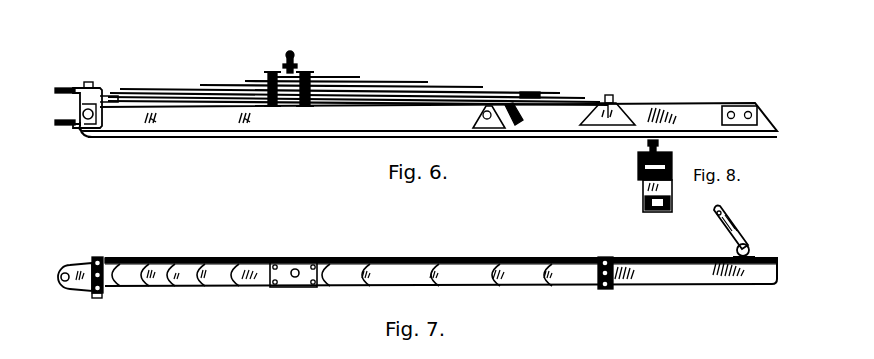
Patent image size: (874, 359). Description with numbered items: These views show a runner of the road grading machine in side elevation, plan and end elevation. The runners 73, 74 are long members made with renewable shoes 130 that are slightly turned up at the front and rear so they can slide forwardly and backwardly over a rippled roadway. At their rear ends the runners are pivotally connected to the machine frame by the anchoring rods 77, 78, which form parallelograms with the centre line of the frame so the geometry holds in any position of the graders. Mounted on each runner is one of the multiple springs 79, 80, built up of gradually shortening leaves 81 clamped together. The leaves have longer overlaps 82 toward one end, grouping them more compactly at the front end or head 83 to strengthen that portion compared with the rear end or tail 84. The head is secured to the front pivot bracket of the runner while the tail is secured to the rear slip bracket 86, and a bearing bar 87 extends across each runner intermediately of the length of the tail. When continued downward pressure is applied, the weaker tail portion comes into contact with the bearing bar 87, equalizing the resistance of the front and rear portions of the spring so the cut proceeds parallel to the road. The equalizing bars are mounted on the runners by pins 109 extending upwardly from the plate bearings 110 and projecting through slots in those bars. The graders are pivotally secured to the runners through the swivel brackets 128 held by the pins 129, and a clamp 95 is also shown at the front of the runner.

In FIG. 6, the runner 73 is at (429, 141).
In FIG. 7, the runner 73 is at (441, 285).
In FIG. 6, the runner 74 is at (429, 141).
In FIG. 7, the runner 74 is at (703, 288).
In FIG. 7, the anchoring rod 77 is at (749, 232).
In FIG. 7, the anchoring rod 78 is at (737, 214).
In FIG. 6, the multiple spring 79 is at (358, 73).
In FIG. 7, the multiple spring 79 is at (332, 260).
In FIG. 6, the multiple spring 80 is at (358, 73).
In FIG. 7, the multiple spring 80 is at (332, 260).
In FIG. 6, the leaves 81 is at (358, 73).
In FIG. 8, the leaves 81 is at (670, 163).
In FIG. 7, the leaves 81 is at (490, 262).
In FIG. 6, the overlaps 82 is at (498, 92).
In FIG. 6, the head 83 is at (373, 76).
In FIG. 6, the tail 84 is at (595, 86).
In FIG. 6, the rear slip bracket 86 is at (624, 108).
In FIG. 8, the rear slip bracket 86 is at (648, 187).
In FIG. 7, the rear slip bracket 86 is at (618, 260).
In FIG. 6, the bearing bar 87 is at (518, 99).
In FIG. 6, the clamp 95 is at (108, 86).
In FIG. 7, the clamp 95 is at (102, 262).
In FIG. 6, the pin 109 is at (295, 52).
In FIG. 8, the pin 109 is at (652, 143).
In FIG. 7, the pin 109 is at (303, 262).
In FIG. 6, the plate bearing 110 is at (312, 67).
In FIG. 7, the plate bearing 110 is at (307, 257).
In FIG. 6, the swivel bracket 128 is at (81, 109).
In FIG. 7, the swivel bracket 128 is at (63, 290).
In FIG. 6, the pin 129 is at (85, 130).
In FIG. 7, the pin 129 is at (95, 299).
In FIG. 6, the renewable shoe 130 is at (245, 140).